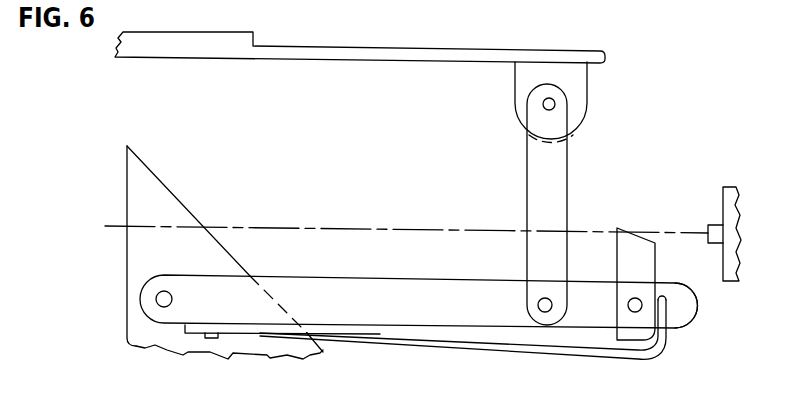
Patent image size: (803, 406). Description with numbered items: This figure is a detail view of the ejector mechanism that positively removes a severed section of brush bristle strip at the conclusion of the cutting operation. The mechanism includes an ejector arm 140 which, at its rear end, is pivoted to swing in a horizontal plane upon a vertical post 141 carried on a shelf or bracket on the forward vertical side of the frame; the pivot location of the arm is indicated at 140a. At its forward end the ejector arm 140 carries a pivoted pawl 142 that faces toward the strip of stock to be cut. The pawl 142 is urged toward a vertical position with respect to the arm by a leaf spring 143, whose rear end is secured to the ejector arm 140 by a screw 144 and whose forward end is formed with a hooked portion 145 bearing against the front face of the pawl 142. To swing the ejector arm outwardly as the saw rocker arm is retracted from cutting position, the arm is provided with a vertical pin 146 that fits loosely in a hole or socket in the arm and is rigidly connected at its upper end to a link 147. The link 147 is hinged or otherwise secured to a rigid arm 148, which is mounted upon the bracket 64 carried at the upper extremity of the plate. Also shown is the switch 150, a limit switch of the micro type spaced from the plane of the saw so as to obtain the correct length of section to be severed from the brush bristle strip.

The upwardly extending plate or bracket 64 is at (234, 25).
The rigid arm 148 is at (462, 60).
The link 147 is at (565, 167).
The vertical pin 146 is at (537, 303).
The ejector arm 140 is at (413, 281).
The hooked portion 145 is at (667, 305).
The pivot of lever arm 140a is at (163, 308).
The vertical post 141 is at (232, 258).
The screw 144 is at (215, 338).
The leaf spring 143 is at (547, 348).
The pivoted pawl 142 is at (636, 246).
The switch 150 is at (733, 193).